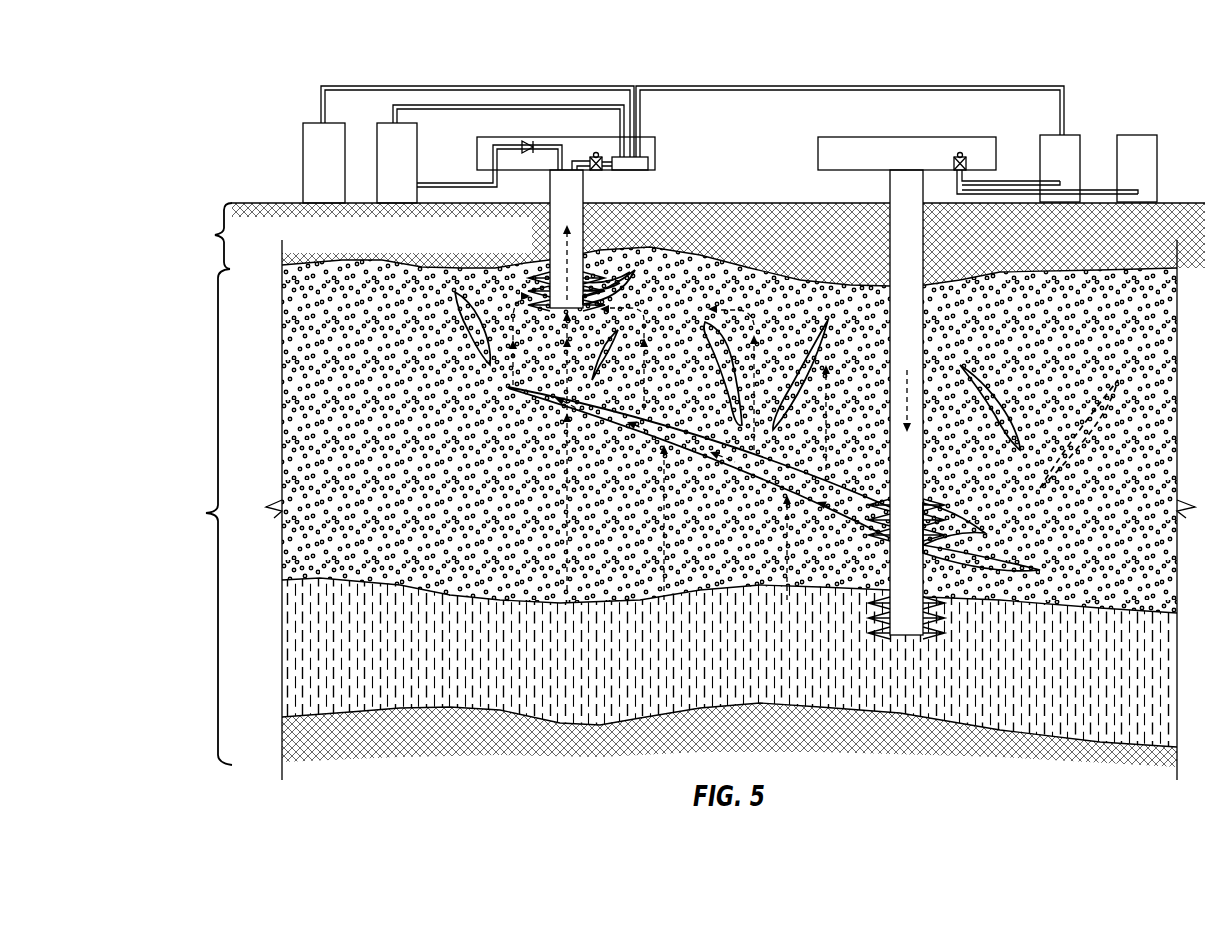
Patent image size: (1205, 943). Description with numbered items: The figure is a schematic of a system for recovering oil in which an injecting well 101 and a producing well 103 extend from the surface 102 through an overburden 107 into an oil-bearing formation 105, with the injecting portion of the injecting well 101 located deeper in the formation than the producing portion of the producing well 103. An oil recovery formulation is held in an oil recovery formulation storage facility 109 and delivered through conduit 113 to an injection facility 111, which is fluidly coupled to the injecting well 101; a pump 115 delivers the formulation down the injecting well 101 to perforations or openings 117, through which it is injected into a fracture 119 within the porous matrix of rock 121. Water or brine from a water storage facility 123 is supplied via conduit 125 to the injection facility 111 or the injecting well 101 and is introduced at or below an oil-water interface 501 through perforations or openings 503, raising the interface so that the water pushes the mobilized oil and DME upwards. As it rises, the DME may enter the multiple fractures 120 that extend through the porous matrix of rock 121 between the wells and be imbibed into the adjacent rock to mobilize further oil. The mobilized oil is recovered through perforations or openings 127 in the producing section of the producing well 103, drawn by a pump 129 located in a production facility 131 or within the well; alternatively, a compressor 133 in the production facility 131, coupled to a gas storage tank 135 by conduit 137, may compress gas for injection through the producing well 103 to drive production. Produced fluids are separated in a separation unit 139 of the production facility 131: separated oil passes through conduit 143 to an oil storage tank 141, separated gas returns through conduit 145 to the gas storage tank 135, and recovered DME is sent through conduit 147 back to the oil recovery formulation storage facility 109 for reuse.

The injecting well 101 is at (927, 252).
The surface 102 is at (737, 203).
The producing well 103 is at (548, 222).
The oil-bearing formation 105 is at (679, 510).
The overburden 107 is at (690, 244).
The oil recovery formulation storage facility 109 is at (1077, 172).
The injection facility 111 is at (864, 166).
The conduit 113 is at (1032, 181).
The pump 115 is at (958, 156).
The perforations or openings 117 is at (985, 533).
The fracture 119 is at (605, 415).
The fractures 120 is at (805, 352).
The porous matrix of rock 121 is at (701, 387).
The water storage facility 123 is at (1154, 172).
The conduit 125 is at (1098, 194).
The perforations or openings 127 is at (635, 270).
The pump 129 is at (596, 153).
The production facility 131 is at (477, 160).
The compressor 133 is at (524, 141).
The gas storage tank 135 is at (414, 174).
The conduit 137 is at (448, 192).
The separation unit 139 is at (632, 172).
The oil storage tank 141 is at (341, 174).
The conduit 143 is at (478, 87).
The conduit 145 is at (525, 106).
The conduit 147 is at (850, 87).
The oil-water interface 501 is at (695, 597).
The perforations or openings 503 is at (948, 630).